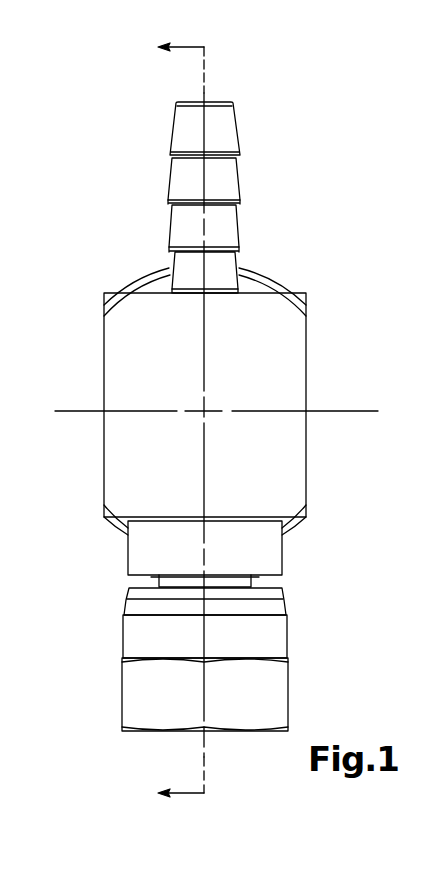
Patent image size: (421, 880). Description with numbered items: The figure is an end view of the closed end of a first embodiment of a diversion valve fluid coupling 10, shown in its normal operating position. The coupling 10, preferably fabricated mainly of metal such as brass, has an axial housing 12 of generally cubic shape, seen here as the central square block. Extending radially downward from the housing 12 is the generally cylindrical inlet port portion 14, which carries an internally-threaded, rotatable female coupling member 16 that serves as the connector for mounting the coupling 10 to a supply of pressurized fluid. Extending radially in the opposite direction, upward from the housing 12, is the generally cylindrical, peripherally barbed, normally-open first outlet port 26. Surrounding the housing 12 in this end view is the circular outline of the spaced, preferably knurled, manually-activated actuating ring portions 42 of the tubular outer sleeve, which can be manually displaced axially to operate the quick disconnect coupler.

The diversion valve fluid coupling 10 is at (350, 170).
The axial housing 12 is at (268, 322).
The inlet port portion 14 is at (262, 557).
The female coupling member 16 is at (247, 703).
The normally-open outlet port 26 is at (220, 128).
The actuating ring portions 42 is at (342, 363).